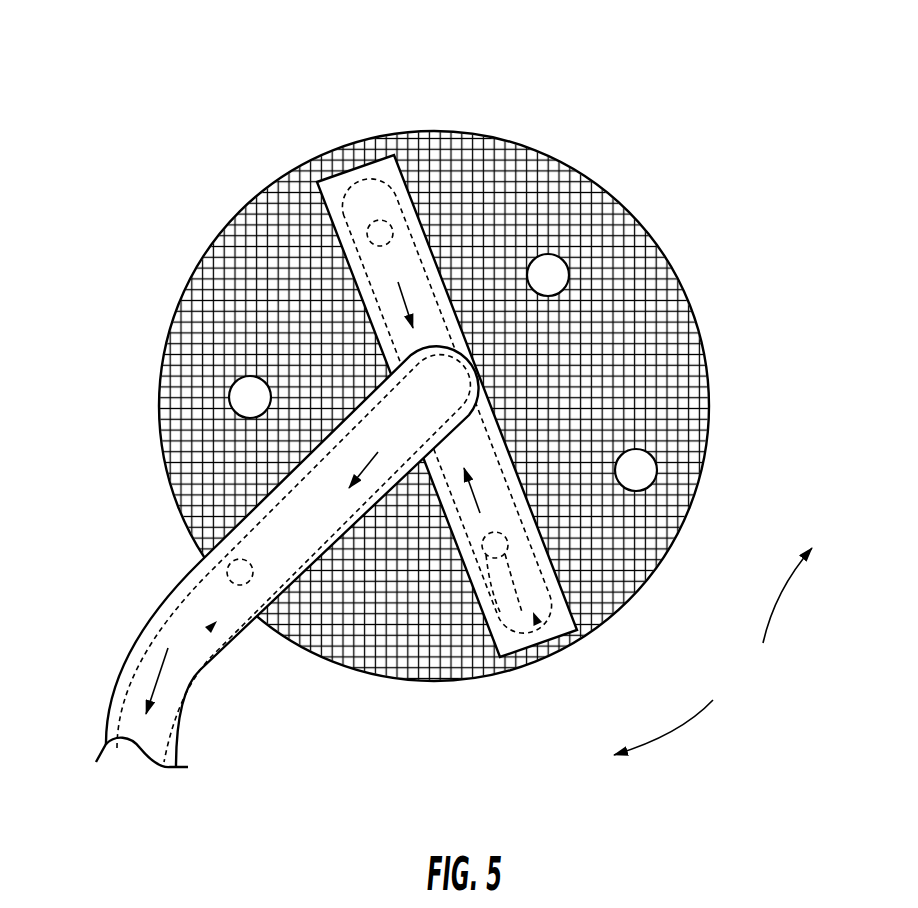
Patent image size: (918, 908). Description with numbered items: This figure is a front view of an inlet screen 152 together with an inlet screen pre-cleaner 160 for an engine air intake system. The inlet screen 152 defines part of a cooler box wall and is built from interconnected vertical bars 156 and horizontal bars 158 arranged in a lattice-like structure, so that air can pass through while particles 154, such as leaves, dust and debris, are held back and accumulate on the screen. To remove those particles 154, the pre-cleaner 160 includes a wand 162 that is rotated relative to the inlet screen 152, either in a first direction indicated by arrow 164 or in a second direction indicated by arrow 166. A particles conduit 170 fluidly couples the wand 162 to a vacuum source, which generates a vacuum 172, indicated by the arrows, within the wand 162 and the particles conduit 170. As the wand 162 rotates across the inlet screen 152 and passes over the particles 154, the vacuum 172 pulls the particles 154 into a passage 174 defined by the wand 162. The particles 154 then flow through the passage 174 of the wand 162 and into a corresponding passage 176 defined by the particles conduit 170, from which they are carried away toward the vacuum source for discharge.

The inlet screen 152 is at (176, 222).
The particles 154 is at (552, 268).
The vertical bars 156 is at (556, 197).
The horizontal bars 158 is at (650, 310).
The inlet screen pre-cleaner 160 is at (366, 145).
The wand 162 is at (562, 588).
The arrow indicating first direction 164 is at (677, 727).
The arrow indicating second direction 166 is at (788, 600).
The particles conduit 170 is at (172, 588).
The vacuum 172 is at (398, 282).
The passage 174 is at (530, 632).
The passage 176 is at (243, 598).